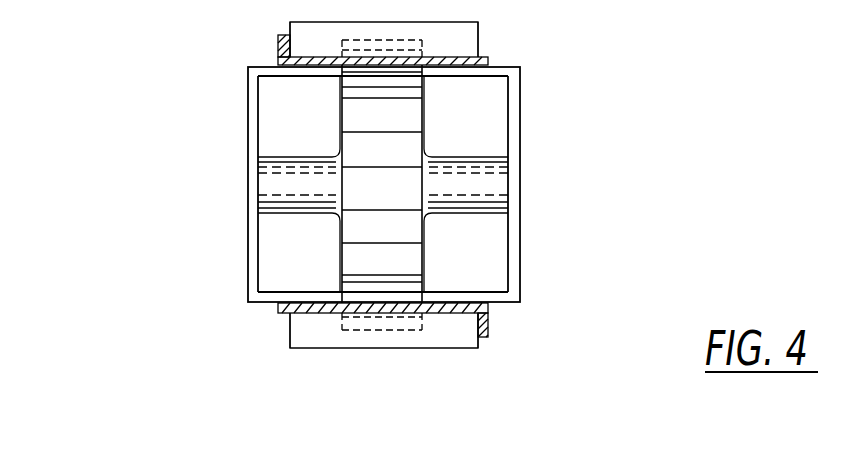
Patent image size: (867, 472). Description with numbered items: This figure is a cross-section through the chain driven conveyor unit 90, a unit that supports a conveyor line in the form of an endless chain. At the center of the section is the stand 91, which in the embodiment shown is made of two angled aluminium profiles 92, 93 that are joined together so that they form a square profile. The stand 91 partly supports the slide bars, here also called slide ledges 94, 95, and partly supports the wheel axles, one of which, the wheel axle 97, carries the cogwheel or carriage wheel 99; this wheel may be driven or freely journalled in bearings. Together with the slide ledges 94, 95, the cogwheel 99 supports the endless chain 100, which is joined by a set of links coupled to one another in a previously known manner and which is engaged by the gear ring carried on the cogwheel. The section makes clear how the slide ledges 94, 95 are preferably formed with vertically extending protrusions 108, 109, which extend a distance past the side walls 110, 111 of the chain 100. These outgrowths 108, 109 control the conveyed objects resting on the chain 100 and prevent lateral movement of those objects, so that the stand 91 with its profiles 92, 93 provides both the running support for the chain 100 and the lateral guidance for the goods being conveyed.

The conveyor unit 90 is at (530, 117).
The stand 91 is at (520, 199).
The aluminum profile 92 is at (250, 122).
The aluminum profile 93 is at (510, 258).
The slide bar 94 is at (489, 62).
The slide bar 95 is at (278, 310).
The wheel axle 97 is at (473, 184).
The cogwheel 99 is at (408, 127).
The endless chain 100 is at (296, 24).
The vertically extending protrusion 108 is at (278, 47).
The vertically extending protrusion 109 is at (490, 313).
The side wall 110 is at (290, 27).
The side wall 111 is at (478, 27).